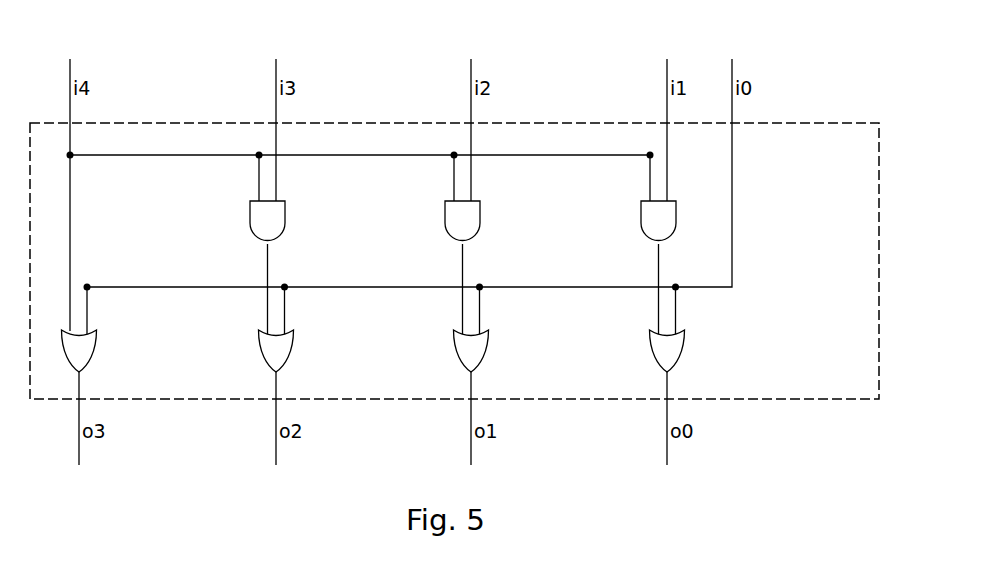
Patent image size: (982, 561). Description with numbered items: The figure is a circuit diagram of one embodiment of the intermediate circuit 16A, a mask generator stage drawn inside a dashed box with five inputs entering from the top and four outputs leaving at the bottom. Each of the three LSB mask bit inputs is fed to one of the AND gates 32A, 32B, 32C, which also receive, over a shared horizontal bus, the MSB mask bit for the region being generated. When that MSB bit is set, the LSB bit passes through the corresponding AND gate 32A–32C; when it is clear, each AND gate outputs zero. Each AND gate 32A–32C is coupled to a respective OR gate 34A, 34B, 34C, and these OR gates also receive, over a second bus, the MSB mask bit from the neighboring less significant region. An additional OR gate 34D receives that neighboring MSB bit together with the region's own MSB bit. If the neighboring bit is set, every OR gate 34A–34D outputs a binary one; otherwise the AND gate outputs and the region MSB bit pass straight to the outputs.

The intermediate circuit 16A is at (787, 200).
The AND gate 32A is at (618, 224).
The AND gate 32B is at (422, 224).
The AND gate 32C is at (227, 224).
The OR gate 34A is at (706, 355).
The OR gate 34B is at (510, 355).
The OR gate 34C is at (315, 355).
The OR gate 34D is at (119, 355).